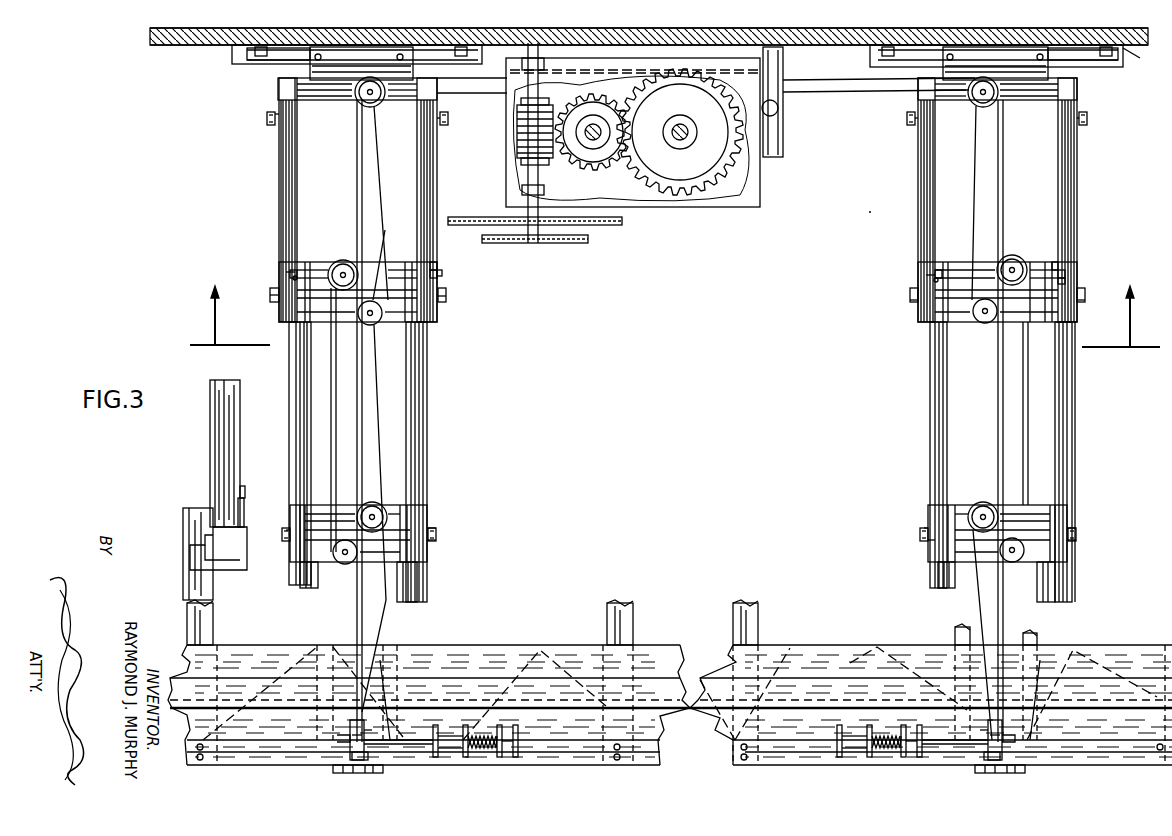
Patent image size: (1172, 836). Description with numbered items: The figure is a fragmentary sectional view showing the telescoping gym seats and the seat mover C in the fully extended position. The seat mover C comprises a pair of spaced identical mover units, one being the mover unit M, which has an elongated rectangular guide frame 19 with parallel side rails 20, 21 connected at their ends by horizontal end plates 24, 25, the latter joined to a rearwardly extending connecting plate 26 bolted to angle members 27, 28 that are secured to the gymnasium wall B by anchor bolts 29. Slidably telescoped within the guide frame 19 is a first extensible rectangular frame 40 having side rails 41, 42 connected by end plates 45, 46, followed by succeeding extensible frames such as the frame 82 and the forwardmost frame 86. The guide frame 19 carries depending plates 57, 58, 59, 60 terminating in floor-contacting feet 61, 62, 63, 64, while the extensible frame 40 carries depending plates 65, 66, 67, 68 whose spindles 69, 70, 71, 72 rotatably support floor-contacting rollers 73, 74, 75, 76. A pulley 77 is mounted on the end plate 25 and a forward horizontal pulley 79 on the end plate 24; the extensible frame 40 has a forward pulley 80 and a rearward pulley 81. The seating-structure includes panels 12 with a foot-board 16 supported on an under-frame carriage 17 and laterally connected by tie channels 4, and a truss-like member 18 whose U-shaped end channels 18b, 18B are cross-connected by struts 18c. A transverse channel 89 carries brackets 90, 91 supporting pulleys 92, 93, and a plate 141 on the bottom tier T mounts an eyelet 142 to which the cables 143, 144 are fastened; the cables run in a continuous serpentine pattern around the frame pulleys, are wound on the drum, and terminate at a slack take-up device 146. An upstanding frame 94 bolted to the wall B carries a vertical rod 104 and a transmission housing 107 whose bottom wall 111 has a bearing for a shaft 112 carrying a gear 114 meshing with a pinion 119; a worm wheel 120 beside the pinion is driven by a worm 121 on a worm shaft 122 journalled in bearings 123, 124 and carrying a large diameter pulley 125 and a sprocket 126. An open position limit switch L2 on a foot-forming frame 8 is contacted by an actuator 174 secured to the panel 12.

The tie channel 4 is at (675, 304).
The foot-forming frame 8 is at (210, 474).
The panel 12 is at (200, 535).
The foot-board 16 is at (662, 696).
The under-frame carriage 17 is at (213, 635).
The truss-like member 18 is at (592, 639).
The U-shaped end channel 18B is at (530, 652).
The U-shaped end channel 18b is at (925, 650).
The strut 18c is at (285, 652).
The guide frame 19 is at (279, 186).
The side rail 20 is at (280, 219).
The side rail 21 is at (437, 186).
The end plate 24 is at (360, 315).
The end plate 25 is at (338, 100).
The connecting plate 26 is at (312, 72).
The angle member 27 is at (260, 58).
The angle member 28 is at (232, 58).
The anchor bolt 29 is at (258, 44).
The first extensible rectangular frame 40 is at (286, 376).
The side rail 41 is at (296, 397).
The side rail 42 is at (427, 337).
The end plate 45 is at (398, 560).
The end plate 46 is at (389, 260).
The depending plate 57 is at (276, 124).
The depending plate 58 is at (443, 115).
The depending plate 59 is at (272, 299).
The depending plate 60 is at (446, 290).
The floor-contacting foot 61 is at (267, 118).
The floor-contacting foot 62 is at (448, 118).
The floor-contacting foot 63 is at (274, 288).
The floor-contacting foot 64 is at (446, 298).
The depending plate 65 is at (290, 274).
The depending plate 66 is at (442, 272).
The depending plate 67 is at (290, 537).
The depending plate 68 is at (437, 540).
The spindle 69 is at (296, 275).
The spindle 70 is at (436, 272).
The spindle 71 is at (282, 536).
The spindle 72 is at (437, 533).
The floor-contacting roller 73 is at (290, 272).
The floor-contacting roller 74 is at (430, 266).
The floor-contacting roller 75 is at (287, 528).
The floor-contacting roller 76 is at (436, 530).
The pulley 77 is at (380, 102).
The forward horizontal pulley 79 is at (378, 318).
The forward horizontal pulley 80 is at (346, 566).
The rearward horizontal pulley 81 is at (350, 262).
The extensible frame 82 is at (422, 593).
The forwardmost extensible frame 86 is at (405, 675).
The transverse channel 89 is at (598, 765).
The bracket 90 is at (337, 738).
The bracket 91 is at (395, 746).
The pulley 92 is at (366, 722).
The pulley 93 is at (372, 730).
The upstanding frame 94 is at (770, 45).
The vertical rod 104 is at (783, 106).
The transmission housing 107 is at (752, 192).
The bottom wall 111 is at (517, 157).
The shaft 112 is at (686, 126).
The gear 114 is at (740, 160).
The pinion 119 is at (590, 150).
The worm wheel 120 is at (612, 172).
The worm 121 is at (517, 132).
The worm shaft 122 is at (525, 185).
The bearing 123 is at (544, 190).
The bearing 124 is at (530, 58).
The large diameter pulley 125 is at (620, 224).
The sprocket 126 is at (575, 243).
The plate 141 is at (380, 770).
The eyelet 142 is at (352, 756).
The cable 143 is at (1019, 619).
The cable 144 is at (980, 610).
The slack take-up device 146 is at (525, 731).
The actuator 174 is at (247, 520).
The gymnasium wall B is at (1140, 50).
The seat mover C is at (861, 216).
The open position limit switch L2 is at (245, 490).
The mover unit M is at (271, 158).
The bottom tier T is at (720, 720).